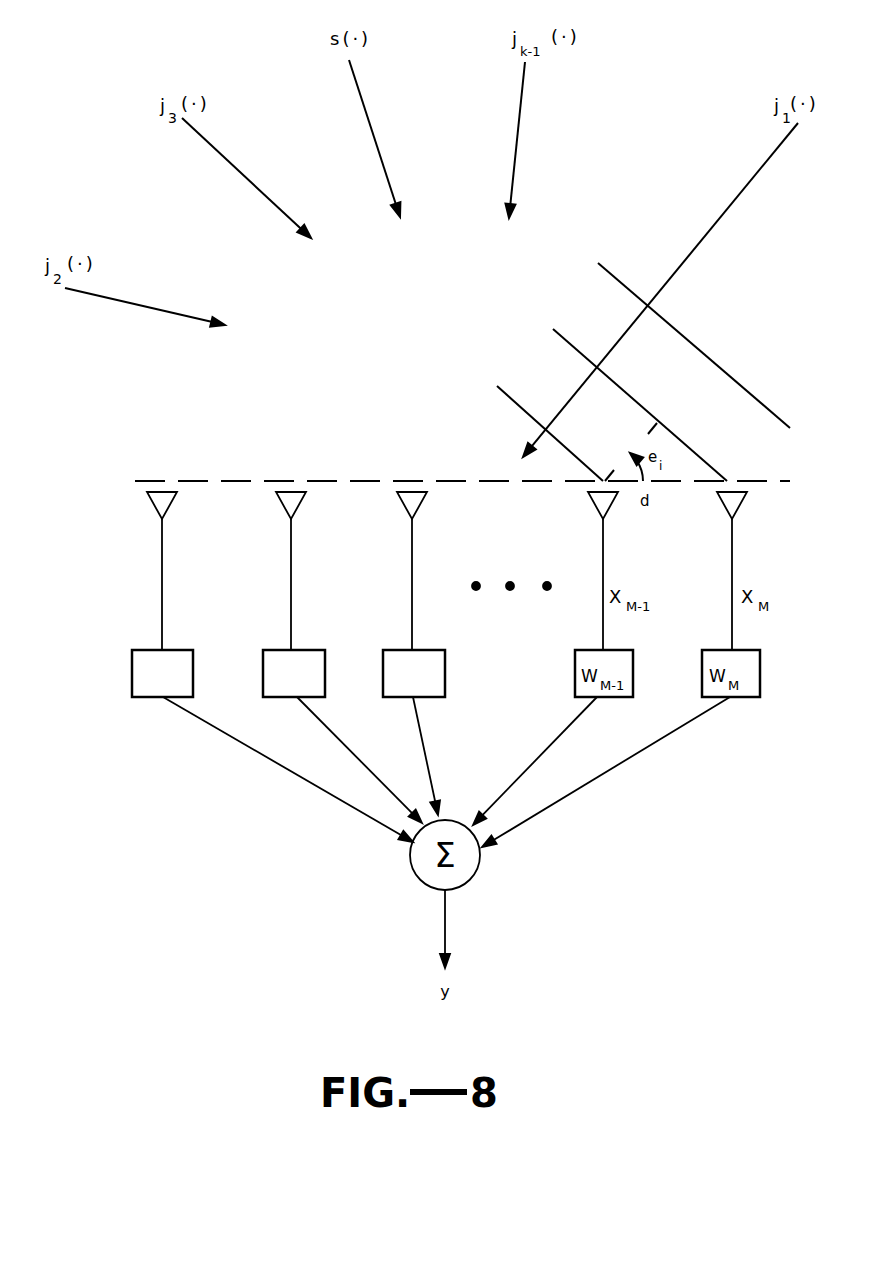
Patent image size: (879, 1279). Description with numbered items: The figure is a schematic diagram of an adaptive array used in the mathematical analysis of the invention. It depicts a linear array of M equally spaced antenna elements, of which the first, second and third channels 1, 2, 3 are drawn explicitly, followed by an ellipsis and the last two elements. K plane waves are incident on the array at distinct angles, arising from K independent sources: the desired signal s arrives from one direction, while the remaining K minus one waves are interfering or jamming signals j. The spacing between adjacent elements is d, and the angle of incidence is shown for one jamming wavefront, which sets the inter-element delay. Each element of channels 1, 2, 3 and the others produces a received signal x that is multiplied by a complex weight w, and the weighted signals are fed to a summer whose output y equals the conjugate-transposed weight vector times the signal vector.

The first antenna channel (antenna, signal X1, weight W1) 1 is at (264, 667).
The second antenna channel (antenna, signal X2, weight W2) 2 is at (336, 657).
The third antenna channel (antenna, signal X3, weight W3) 3 is at (408, 653).